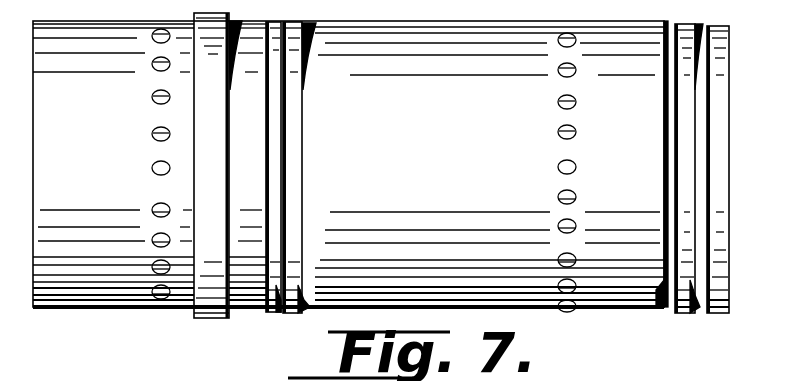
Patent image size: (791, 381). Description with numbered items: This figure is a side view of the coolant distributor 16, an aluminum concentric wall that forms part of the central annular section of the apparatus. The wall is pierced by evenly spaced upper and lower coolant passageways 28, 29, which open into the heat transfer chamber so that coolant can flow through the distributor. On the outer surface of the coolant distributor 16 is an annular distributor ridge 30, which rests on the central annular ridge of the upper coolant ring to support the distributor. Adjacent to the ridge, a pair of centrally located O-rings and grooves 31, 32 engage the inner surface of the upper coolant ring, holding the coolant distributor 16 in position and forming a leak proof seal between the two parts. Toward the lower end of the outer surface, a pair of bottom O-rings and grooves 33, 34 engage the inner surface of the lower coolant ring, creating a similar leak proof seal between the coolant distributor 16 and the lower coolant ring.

The coolant distributor 16 is at (107, 317).
The upper coolant passageways 28 is at (567, 314).
The lower coolant passageways 29 is at (162, 300).
The annular distributor ridge 30 is at (212, 320).
The O-ring and groove 31 is at (270, 314).
The O-ring and groove 32 is at (306, 314).
The bottom O-ring and groove 33 is at (672, 315).
The bottom O-ring and groove 34 is at (706, 315).